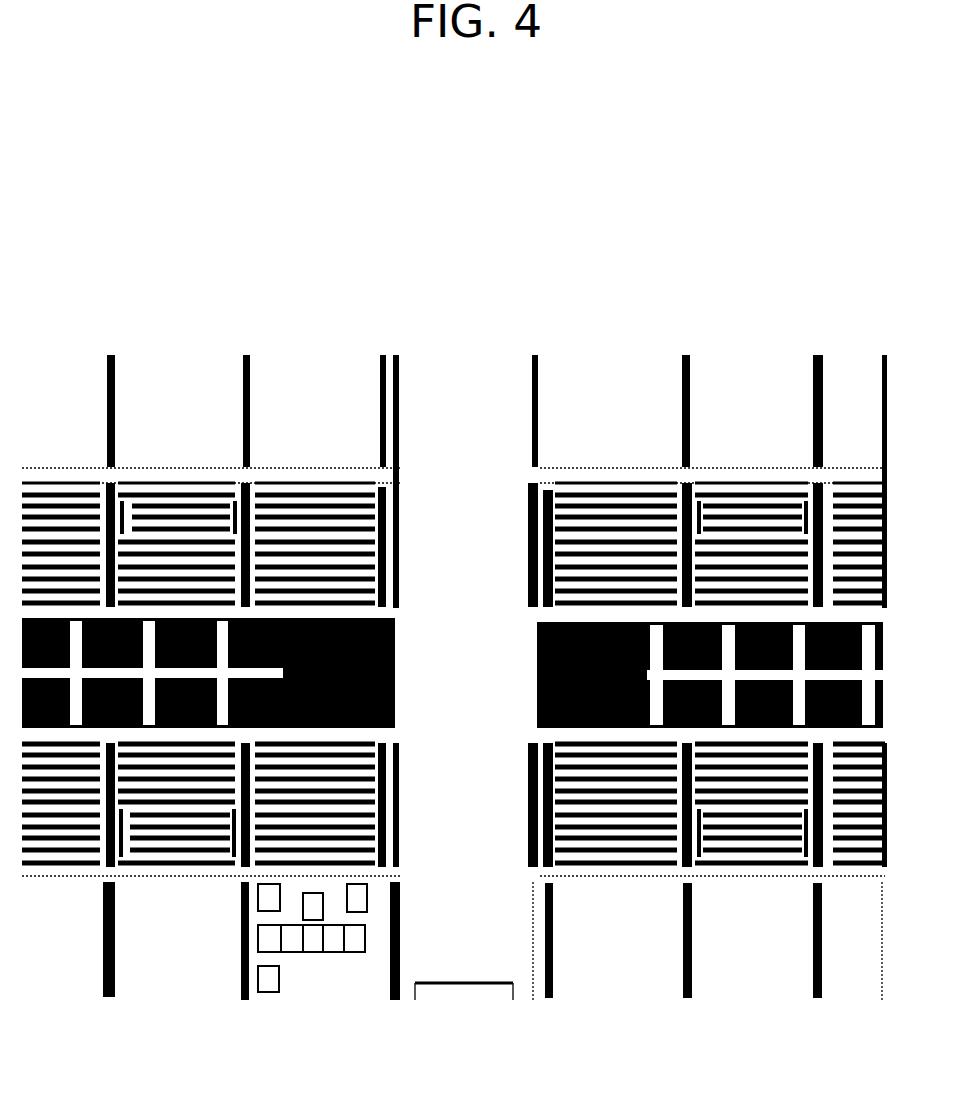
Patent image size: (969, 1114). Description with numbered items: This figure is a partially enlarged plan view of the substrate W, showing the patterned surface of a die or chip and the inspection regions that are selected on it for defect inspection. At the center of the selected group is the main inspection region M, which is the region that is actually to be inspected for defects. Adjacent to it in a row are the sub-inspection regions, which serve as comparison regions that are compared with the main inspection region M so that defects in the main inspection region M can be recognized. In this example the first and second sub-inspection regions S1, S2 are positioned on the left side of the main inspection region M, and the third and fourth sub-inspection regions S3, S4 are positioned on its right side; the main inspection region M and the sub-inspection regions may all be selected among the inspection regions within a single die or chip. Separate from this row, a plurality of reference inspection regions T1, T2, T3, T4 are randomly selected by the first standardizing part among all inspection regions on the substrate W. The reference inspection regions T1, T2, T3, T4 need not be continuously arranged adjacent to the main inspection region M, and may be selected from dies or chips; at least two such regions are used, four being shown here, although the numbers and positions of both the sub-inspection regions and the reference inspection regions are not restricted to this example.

The substrate W is at (477, 275).
The first reference inspection region T1 is at (367, 890).
The second reference inspection region T2 is at (258, 892).
The third reference inspection region T3 is at (323, 910).
The fourth reference inspection region T4 is at (263, 992).
The first sub-inspection region S1 is at (258, 937).
The second sub-inspection region S2 is at (295, 953).
The third sub-inspection region S3 is at (328, 953).
The fourth sub-inspection region S4 is at (348, 953).
The main inspection region M is at (310, 953).